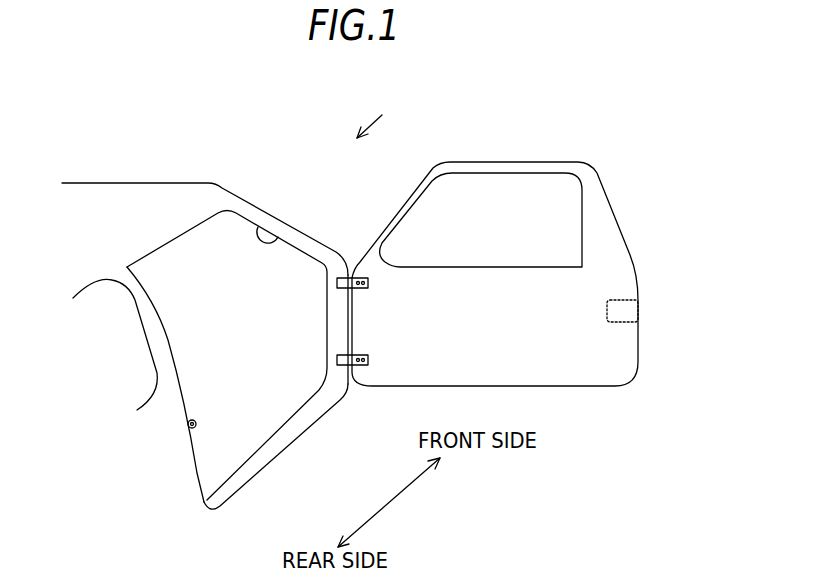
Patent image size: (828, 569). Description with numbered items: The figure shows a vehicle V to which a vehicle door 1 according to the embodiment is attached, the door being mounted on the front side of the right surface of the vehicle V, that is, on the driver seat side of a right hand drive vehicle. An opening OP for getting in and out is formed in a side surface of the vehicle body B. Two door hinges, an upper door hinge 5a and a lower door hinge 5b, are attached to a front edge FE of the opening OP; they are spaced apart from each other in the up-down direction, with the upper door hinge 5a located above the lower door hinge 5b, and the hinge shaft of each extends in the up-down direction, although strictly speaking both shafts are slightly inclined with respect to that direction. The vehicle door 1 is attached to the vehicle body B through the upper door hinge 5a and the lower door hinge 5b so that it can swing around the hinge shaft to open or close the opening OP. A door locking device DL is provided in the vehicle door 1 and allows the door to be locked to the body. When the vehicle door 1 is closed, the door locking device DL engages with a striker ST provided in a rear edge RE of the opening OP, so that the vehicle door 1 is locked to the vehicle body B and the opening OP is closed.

The vehicle door 1 is at (540, 164).
The vehicle body B is at (150, 183).
The opening OP is at (278, 237).
The front edge FE is at (338, 302).
The rear edge RE is at (187, 397).
The striker ST is at (197, 424).
The upper door hinge 5a is at (349, 277).
The lower door hinge 5b is at (351, 366).
The door locking device DL is at (638, 311).
The vehicle V is at (379, 121).